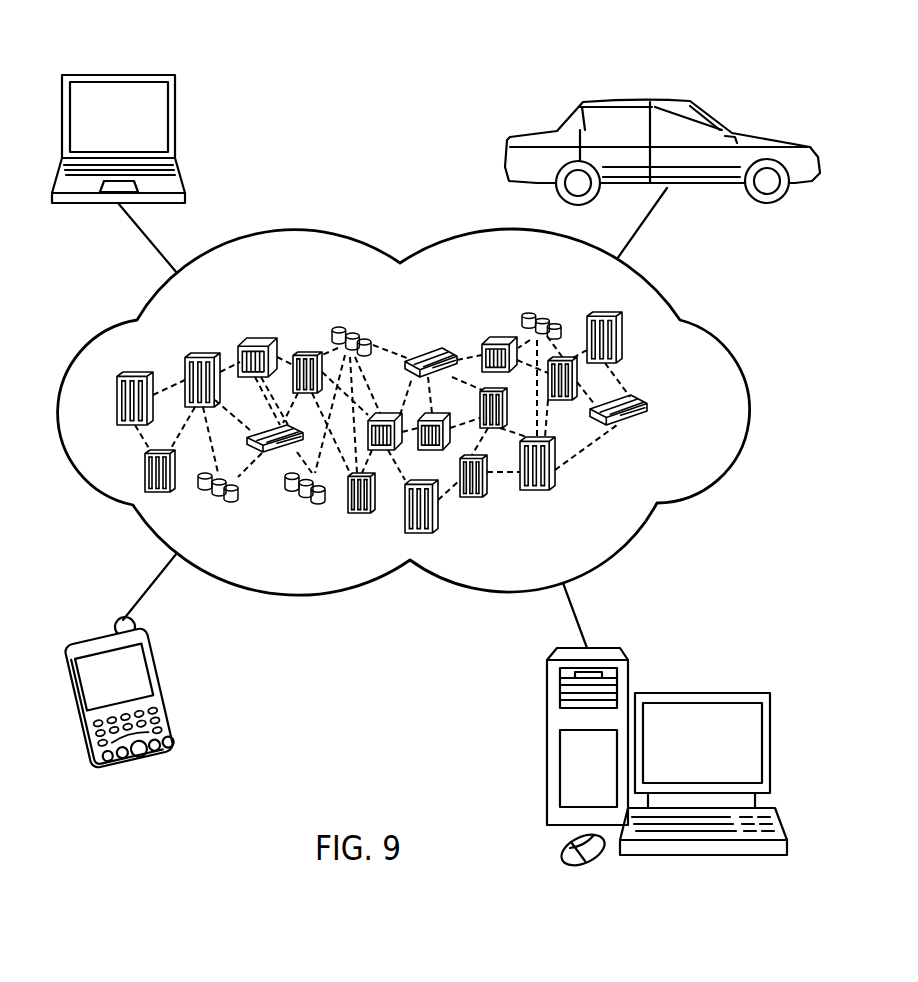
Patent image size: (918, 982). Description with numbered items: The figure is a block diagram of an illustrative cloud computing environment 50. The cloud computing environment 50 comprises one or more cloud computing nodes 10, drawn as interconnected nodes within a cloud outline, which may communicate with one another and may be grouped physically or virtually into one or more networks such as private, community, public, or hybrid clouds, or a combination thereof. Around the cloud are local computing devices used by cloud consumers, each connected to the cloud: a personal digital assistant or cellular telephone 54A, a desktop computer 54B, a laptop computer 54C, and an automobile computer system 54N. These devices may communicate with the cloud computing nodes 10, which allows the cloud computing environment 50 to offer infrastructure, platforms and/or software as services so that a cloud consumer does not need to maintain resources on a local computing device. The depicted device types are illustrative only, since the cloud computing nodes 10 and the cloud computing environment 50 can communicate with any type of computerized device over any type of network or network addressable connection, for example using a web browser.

The cloud computing environment 50 is at (715, 326).
The cloud computing node 10 is at (657, 410).
The personal digital assistant or cellular telephone 54A is at (100, 636).
The desktop computer 54B is at (702, 692).
The laptop computer 54C is at (118, 74).
The automobile computer system 54N is at (643, 100).